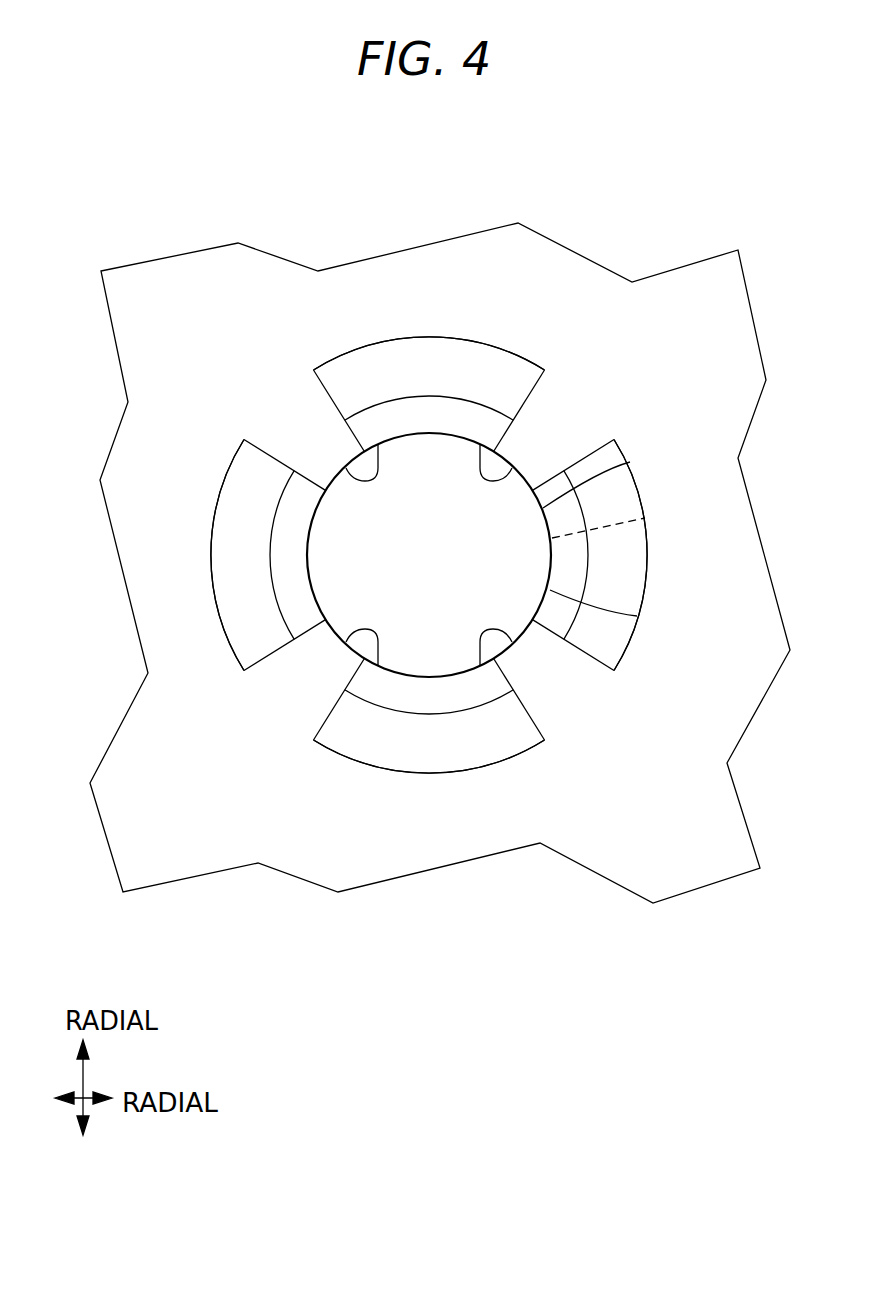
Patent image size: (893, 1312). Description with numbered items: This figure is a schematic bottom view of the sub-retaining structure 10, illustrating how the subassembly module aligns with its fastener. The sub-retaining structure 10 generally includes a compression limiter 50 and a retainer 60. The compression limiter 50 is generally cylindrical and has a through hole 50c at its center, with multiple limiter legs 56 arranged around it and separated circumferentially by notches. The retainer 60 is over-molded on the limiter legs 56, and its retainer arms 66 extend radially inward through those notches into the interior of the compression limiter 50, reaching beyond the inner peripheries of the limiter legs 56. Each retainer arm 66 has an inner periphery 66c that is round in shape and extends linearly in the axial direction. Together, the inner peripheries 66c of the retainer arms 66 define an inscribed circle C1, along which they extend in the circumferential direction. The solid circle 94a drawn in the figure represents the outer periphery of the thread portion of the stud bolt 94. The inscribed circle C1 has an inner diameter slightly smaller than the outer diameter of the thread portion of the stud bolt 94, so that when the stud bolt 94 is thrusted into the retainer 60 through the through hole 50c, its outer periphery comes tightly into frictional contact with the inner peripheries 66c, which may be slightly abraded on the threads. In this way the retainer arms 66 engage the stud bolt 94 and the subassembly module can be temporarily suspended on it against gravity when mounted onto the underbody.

The sub-retaining structure 10 is at (744, 357).
The compression limiter 50 is at (266, 511).
The through hole 50c is at (357, 570).
The limiter legs 56 is at (434, 380).
The retainer 60 is at (574, 414).
The retainer arms 66 is at (313, 437).
The inner periphery 66c is at (377, 472).
The stud bolt 94 is at (637, 616).
The solid circle 94a is at (630, 462).
The inscribed circle C1 is at (645, 518).